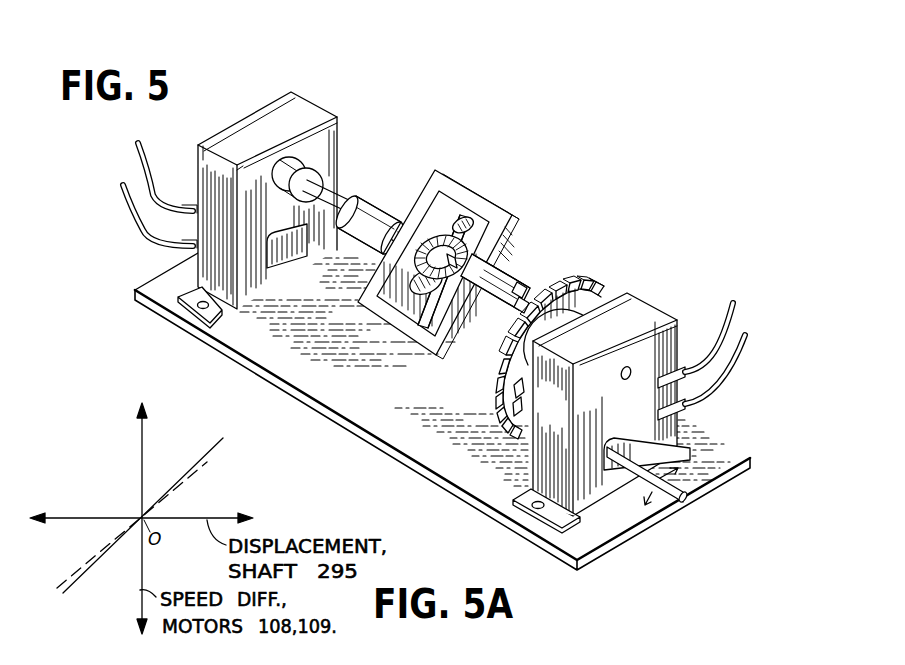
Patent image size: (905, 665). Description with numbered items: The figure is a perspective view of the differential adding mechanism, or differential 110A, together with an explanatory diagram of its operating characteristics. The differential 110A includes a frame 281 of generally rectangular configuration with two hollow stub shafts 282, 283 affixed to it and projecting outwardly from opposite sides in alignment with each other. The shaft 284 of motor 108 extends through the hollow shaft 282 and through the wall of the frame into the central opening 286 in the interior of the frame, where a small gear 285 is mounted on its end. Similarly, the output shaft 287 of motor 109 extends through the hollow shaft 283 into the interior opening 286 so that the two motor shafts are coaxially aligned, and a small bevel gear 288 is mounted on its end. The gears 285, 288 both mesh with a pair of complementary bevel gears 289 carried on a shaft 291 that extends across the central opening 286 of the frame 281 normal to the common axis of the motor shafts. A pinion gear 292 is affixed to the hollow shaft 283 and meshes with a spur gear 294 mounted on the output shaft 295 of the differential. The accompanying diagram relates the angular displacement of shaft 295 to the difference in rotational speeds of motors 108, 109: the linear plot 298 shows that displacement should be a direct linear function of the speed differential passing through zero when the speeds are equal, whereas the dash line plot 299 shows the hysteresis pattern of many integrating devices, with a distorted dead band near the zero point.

In FIG. 5, the motor 108 is at (243, 130).
In FIG. 5, the motor 109 is at (633, 303).
In FIG. 5, the differential 110A is at (618, 177).
In FIG. 5, the frame 281 is at (518, 235).
In FIG. 5, the hollow stub shaft 282 is at (361, 199).
In FIG. 5, the hollow stub shaft 283 is at (501, 298).
In FIG. 5, the shaft 284 is at (324, 188).
In FIG. 5, the small gear 285 is at (406, 265).
In FIG. 5, the central opening 286 is at (404, 306).
In FIG. 5, the output shaft 287 is at (653, 358).
In FIG. 5, the small bevel gear 288 is at (463, 266).
In FIG. 5, the complementary bevel gears 289 is at (449, 225).
In FIG. 5, the shaft 291 is at (470, 248).
In FIG. 5, the pinion gear 292 is at (570, 284).
In FIG. 5, the spur gear 294 is at (498, 390).
In FIG. 5, the output shaft 295 is at (646, 485).
In FIG. 5A, the linear plot 298 is at (199, 457).
In FIG. 5A, the dash line plot 299 is at (206, 465).